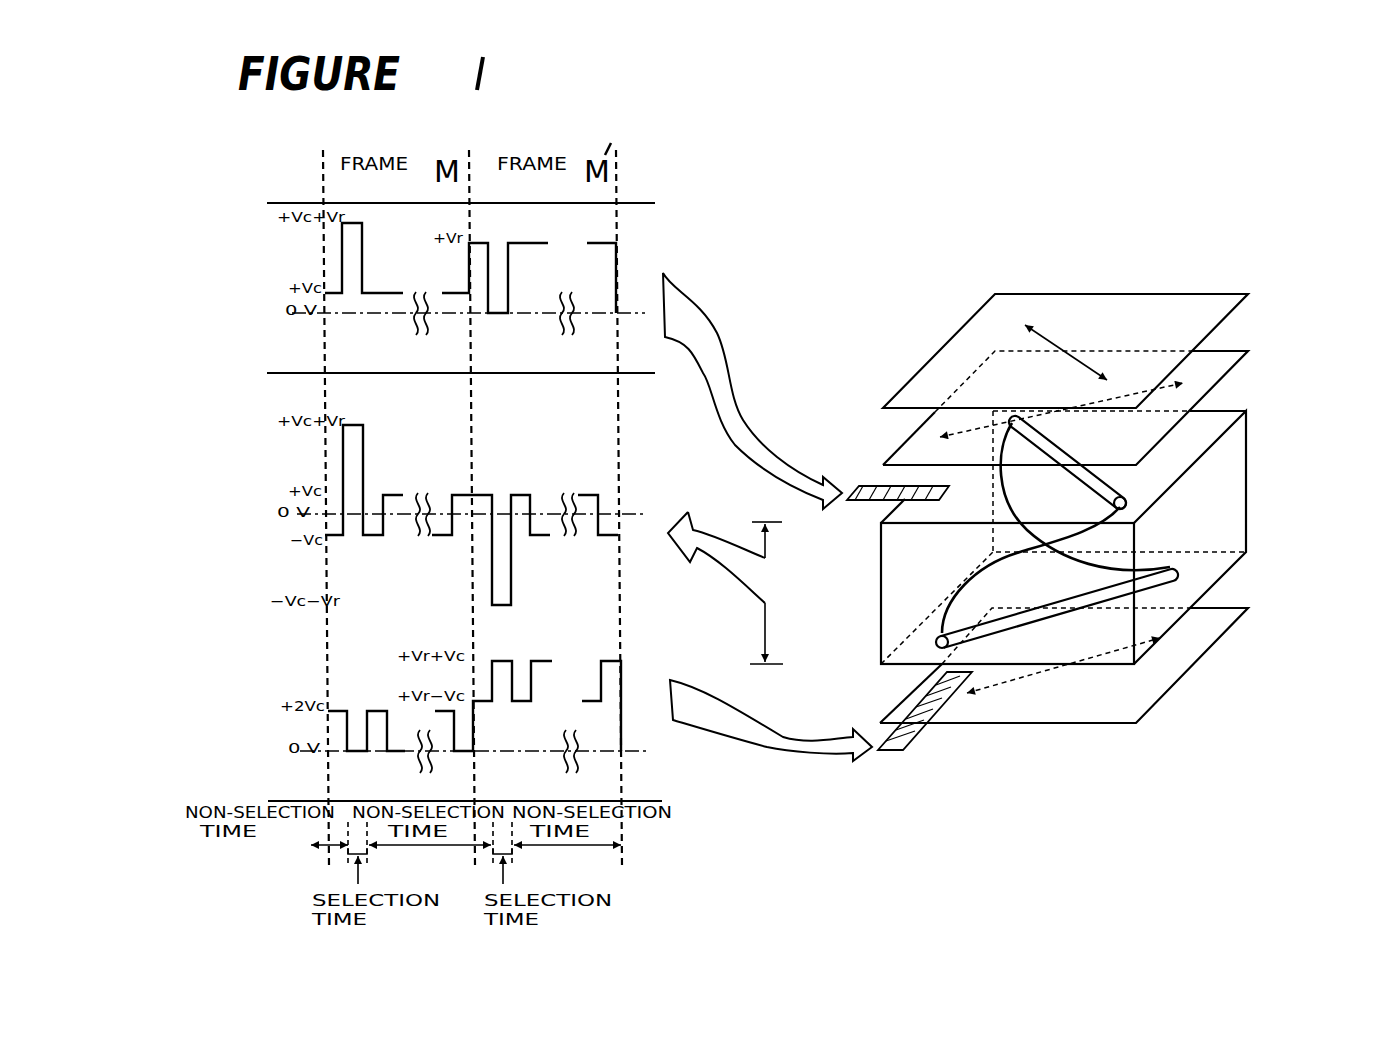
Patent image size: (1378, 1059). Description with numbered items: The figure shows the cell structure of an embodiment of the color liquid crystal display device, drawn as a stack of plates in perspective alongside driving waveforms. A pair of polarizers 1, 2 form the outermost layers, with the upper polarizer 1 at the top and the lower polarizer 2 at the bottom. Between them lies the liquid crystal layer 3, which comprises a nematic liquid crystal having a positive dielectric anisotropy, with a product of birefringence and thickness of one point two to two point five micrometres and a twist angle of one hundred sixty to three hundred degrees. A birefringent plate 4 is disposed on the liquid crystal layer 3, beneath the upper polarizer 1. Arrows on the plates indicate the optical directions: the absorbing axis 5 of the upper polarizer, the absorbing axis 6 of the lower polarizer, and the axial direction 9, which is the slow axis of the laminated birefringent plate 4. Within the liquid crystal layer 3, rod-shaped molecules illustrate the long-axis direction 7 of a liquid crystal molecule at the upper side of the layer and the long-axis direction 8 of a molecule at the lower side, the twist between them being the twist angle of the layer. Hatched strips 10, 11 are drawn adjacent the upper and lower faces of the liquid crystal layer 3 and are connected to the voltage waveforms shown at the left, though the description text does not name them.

The polarizer 1 is at (913, 373).
The polarizer 2 is at (1232, 623).
The liquid crystal layer 3 is at (879, 598).
The birefringent plate 4 is at (880, 462).
The absorbing axis of upper polarizer 5 is at (1010, 338).
The absorbing axis of lower polarizer 6 is at (1113, 653).
The direction of long axis of liquid crystal molecule at upper side 7 is at (1115, 488).
The direction of long axis of liquid crystal molecule at lower side 8 is at (1160, 592).
The axial direction of birefringent plate 9 is at (1173, 387).
The upper electrode 10 is at (867, 502).
The lower electrode 11 is at (880, 757).